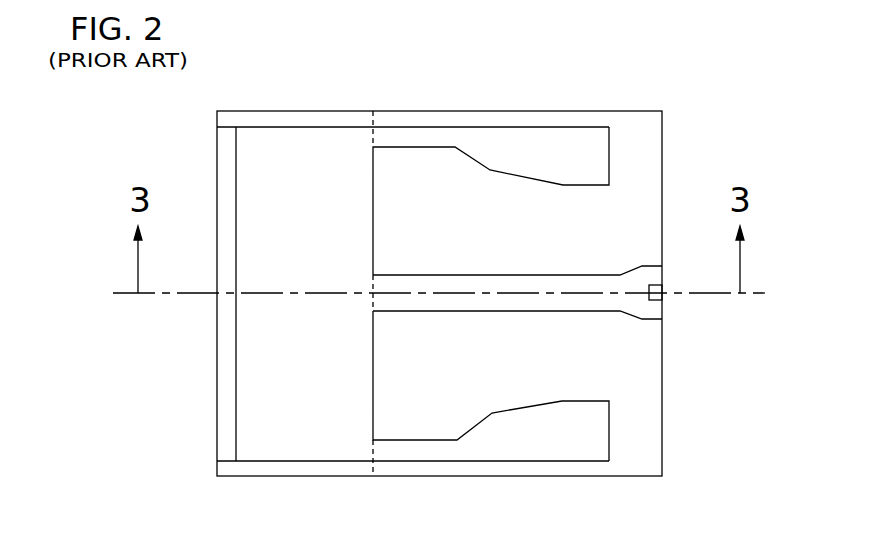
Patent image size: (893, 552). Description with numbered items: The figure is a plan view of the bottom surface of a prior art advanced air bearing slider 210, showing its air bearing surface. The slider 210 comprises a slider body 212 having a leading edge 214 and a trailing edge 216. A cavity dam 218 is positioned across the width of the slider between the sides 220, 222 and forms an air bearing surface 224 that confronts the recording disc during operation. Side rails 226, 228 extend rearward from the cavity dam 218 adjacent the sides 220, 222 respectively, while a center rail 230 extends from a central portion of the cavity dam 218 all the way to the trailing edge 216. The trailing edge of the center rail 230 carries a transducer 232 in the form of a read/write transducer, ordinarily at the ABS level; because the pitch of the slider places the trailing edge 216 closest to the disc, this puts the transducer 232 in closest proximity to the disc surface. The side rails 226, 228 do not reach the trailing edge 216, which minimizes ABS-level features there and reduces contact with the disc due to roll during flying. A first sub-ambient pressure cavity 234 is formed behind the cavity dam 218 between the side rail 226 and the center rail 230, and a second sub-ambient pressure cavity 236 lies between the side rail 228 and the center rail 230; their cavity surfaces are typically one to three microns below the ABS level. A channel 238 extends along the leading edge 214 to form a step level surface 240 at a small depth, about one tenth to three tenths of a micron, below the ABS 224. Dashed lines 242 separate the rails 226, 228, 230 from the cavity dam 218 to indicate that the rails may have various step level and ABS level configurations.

The AAB slider 210 is at (148, 434).
The slider body 212 is at (305, 477).
The leading edge 214 is at (217, 445).
The trailing edge 216 is at (663, 423).
The cavity dam 218 is at (235, 170).
The side 220 is at (425, 118).
The side 222 is at (422, 462).
The air bearing surface 224 is at (290, 142).
The side rail 226 is at (575, 125).
The side rail 228 is at (555, 460).
The center rail 230 is at (597, 273).
The transducer 232 is at (662, 287).
The first sub-ambient pressure cavity 234 is at (505, 207).
The second sub-ambient pressure cavity 236 is at (450, 407).
The channel 238 is at (230, 340).
The step level surface 240 is at (217, 383).
The dashed lines 242 is at (363, 123).